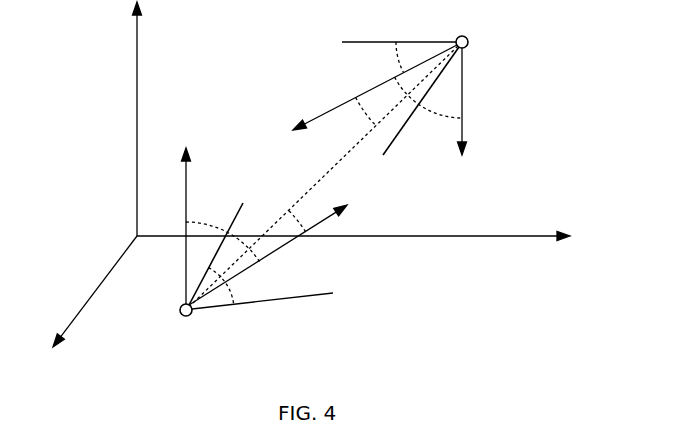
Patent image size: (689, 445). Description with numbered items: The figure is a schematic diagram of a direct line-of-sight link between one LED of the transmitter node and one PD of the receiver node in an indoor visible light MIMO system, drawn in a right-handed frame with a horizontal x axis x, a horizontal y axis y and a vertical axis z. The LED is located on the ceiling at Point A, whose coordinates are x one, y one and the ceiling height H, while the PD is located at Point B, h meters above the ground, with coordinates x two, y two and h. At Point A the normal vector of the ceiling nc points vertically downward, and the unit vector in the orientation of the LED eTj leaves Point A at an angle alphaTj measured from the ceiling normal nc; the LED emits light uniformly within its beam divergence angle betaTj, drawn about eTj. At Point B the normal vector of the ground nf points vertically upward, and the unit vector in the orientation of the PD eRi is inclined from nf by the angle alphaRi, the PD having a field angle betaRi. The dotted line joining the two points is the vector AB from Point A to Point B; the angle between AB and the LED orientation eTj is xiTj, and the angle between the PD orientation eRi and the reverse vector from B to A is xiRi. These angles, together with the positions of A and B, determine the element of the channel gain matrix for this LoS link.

The Point A is at (438, 77).
The Point B is at (205, 278).
The x coordinate axis x is at (90, 307).
The y coordinate axis y is at (357, 250).
The vertical coordinate axis z is at (137, 119).
The normal vector of the ground nf is at (197, 128).
The normal vector of the ceiling nc is at (475, 164).
The unit vector in the orientation of the LED eTj is at (292, 99).
The unit vector in the orientation of the PD eRi is at (350, 183).
The angle between the ceiling normal and the LED orientation alphaTj is at (415, 97).
The beam divergence angle of the LED betaTj is at (386, 57).
The angle between vector AB and the LED orientation xiTj is at (356, 115).
The angle between the ground normal and the PD orientation alphaRi is at (223, 231).
The field angle of the PD betaRi is at (234, 286).
The angle between the PD orientation and vector BA xiRi is at (306, 216).
The vector from Point A to Point B AB is at (324, 176).